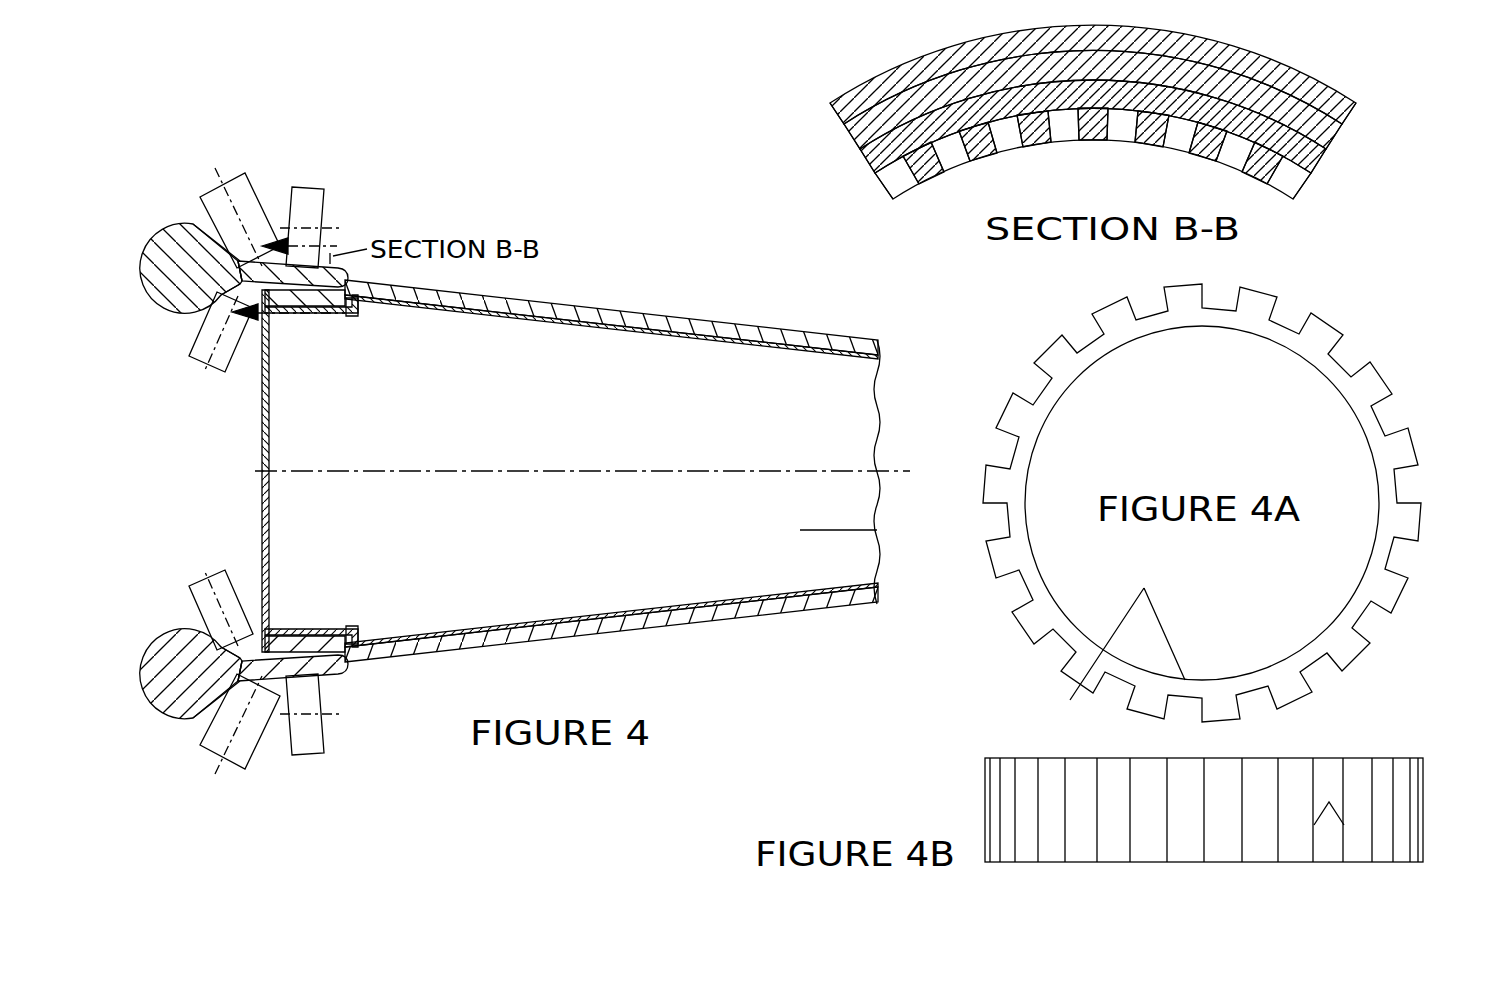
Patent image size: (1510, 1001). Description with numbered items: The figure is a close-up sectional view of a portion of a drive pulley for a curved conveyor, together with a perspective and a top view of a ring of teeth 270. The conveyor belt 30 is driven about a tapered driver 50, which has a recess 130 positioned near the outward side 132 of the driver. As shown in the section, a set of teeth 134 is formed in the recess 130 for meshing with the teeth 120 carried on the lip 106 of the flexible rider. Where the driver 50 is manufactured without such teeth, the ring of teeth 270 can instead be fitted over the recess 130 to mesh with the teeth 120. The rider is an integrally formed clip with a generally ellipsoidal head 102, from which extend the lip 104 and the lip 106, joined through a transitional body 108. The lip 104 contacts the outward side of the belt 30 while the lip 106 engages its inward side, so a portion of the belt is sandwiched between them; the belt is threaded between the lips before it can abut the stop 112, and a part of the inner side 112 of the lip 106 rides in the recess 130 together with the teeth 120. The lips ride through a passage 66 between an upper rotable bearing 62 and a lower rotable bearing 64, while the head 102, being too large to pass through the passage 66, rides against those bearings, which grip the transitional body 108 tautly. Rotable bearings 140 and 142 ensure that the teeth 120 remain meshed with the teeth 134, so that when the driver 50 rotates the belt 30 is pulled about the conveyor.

In FIG. 4, the conveyor belt 30 is at (830, 343).
In FIG. 4, the tapered driver 50 is at (877, 530).
In FIG. 4, the upper rotable bearing 62 is at (242, 198).
In FIG. 4, the lower rotable bearing 64 is at (245, 357).
In FIG. 4, the passage 66 is at (243, 263).
In FIG. 4, the head 102 is at (177, 263).
In FIG. 4, the lip or leg 104 is at (255, 265).
In FIG. 4, the lip or leg 106 is at (262, 437).
In FIG. 4, the transitional body 108 is at (238, 322).
In FIG. 4, the end or stop 112 is at (300, 310).
In FIG. 4, the teeth 120 is at (292, 304).
In FIG. 4, the recess 130 is at (255, 470).
In FIG. 4, the outward side 132 is at (347, 318).
In FIG. 4, the teeth 134 is at (1000, 140).
In FIG. 4A, the teeth 134 is at (1053, 352).
In FIG. 4B, the teeth 134 is at (1329, 802).
In FIG. 4, the rotable bearing 140 is at (320, 208).
In FIG. 4, the rotable bearing 142 is at (312, 733).
In FIG. 4A, the ring of teeth 270 is at (1070, 700).
In FIG. 4B, the ring of teeth 270 is at (985, 786).